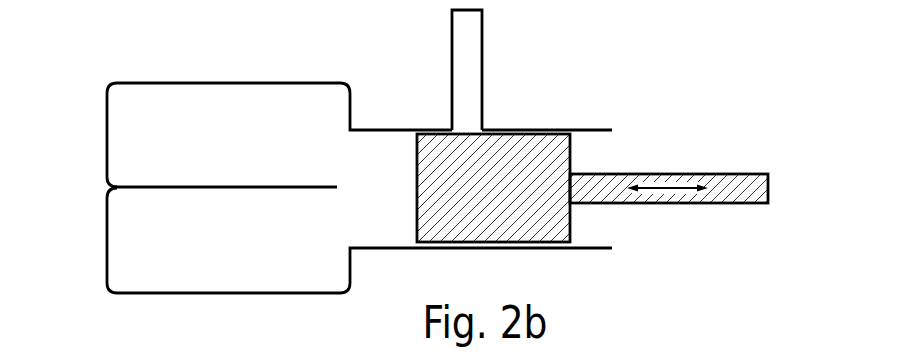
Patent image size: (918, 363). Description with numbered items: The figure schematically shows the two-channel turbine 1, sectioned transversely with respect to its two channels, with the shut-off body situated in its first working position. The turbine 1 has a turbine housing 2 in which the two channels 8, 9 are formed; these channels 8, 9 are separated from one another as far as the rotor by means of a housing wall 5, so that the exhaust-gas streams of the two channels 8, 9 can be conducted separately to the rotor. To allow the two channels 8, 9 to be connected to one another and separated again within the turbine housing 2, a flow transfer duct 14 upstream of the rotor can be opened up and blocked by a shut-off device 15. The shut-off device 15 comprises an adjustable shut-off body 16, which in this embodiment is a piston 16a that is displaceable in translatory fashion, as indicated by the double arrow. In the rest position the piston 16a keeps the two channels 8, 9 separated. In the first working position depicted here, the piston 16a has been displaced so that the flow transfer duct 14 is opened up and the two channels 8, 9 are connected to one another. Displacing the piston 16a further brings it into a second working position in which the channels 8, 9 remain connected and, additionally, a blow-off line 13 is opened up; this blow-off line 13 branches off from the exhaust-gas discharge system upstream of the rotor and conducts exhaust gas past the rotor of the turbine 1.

The turbine 1 is at (70, 136).
The turbine housing 2 is at (88, 115).
The housing wall 5 is at (177, 187).
The channel 8 is at (221, 150).
The channel 9 is at (221, 252).
The blow-off line 13 is at (473, 42).
The flow transfer duct 14 is at (358, 200).
The shut-off device 15 is at (653, 85).
The shut-off body 16 is at (493, 188).
The piston 16a is at (453, 200).